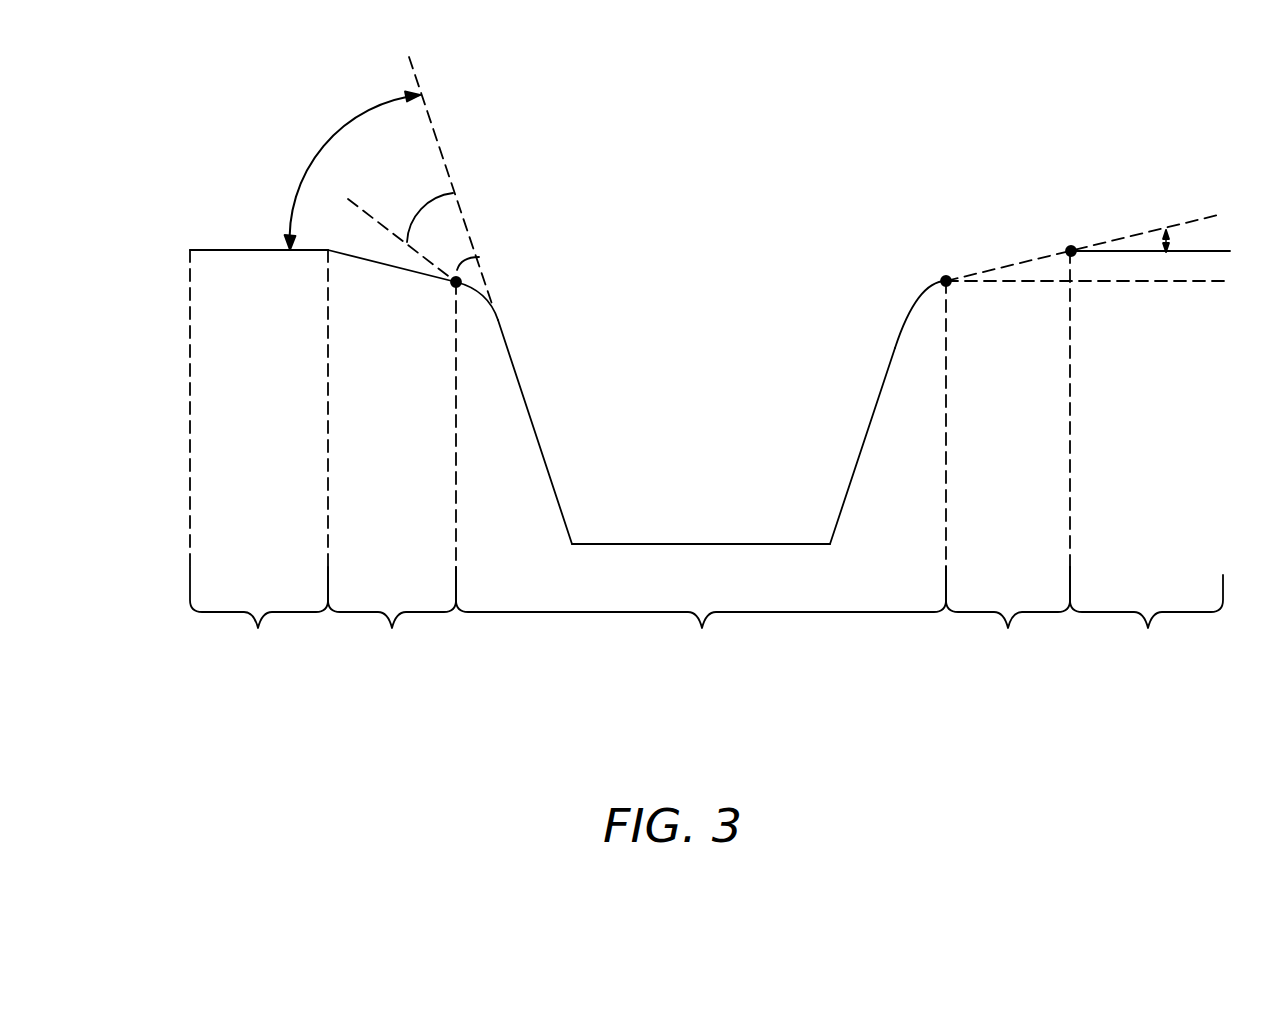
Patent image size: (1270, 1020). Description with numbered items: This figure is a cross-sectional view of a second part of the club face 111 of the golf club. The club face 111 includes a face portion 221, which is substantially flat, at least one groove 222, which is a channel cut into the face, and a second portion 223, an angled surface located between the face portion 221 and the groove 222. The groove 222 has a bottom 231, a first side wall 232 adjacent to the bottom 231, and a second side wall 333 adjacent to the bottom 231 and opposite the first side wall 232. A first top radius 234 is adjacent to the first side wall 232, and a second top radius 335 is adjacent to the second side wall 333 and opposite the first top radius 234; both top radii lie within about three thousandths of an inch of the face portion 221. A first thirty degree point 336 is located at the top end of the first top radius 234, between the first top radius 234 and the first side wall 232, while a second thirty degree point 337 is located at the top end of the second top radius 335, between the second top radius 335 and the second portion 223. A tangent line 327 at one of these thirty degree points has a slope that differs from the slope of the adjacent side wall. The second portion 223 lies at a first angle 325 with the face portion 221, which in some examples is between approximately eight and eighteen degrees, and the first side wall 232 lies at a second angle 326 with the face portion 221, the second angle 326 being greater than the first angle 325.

The club face 111 is at (1087, 728).
The face portion 221 is at (710, 454).
The groove 222 is at (701, 466).
The second portion 223 is at (699, 454).
The bottom 231 is at (700, 544).
The first side wall 232 is at (530, 407).
The first top radius 234 is at (483, 294).
The first angle 325 is at (1166, 252).
The second angle 326 is at (328, 147).
The tangent line 327 is at (453, 193).
The second side wall 333 is at (868, 427).
The second top radius 335 is at (913, 308).
The first thirty degree point 336 is at (479, 257).
The second thirty degree point 337 is at (946, 276).